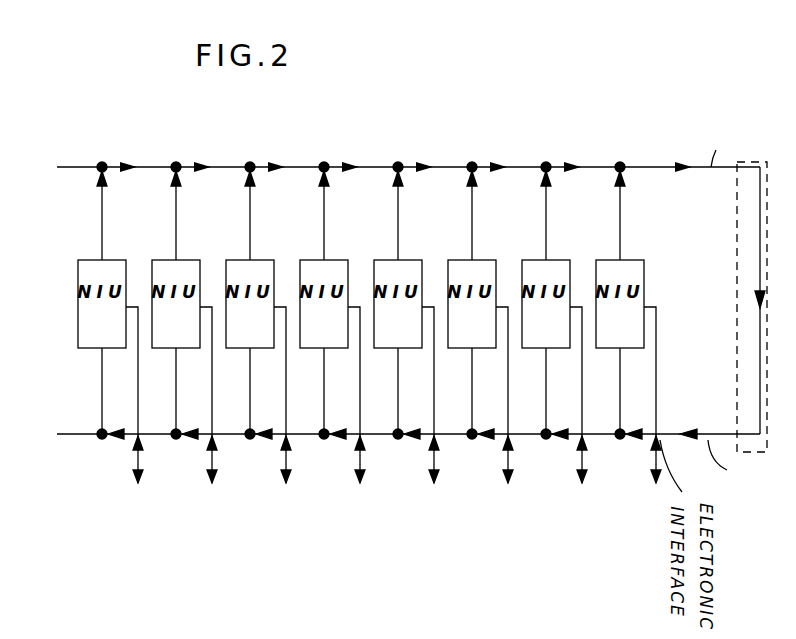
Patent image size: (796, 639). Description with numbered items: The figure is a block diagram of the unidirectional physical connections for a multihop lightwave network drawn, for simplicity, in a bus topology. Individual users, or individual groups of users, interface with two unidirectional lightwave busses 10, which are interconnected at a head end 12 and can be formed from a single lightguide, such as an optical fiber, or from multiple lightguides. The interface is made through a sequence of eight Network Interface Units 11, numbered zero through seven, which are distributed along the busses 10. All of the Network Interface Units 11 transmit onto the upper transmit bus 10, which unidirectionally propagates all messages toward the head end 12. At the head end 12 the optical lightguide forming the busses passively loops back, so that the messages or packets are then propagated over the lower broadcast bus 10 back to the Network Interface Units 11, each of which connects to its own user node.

The unidirectional lightwave bus 10 is at (651, 167).
The Network Interface Unit 11 is at (348, 348).
The head end 12 is at (736, 389).